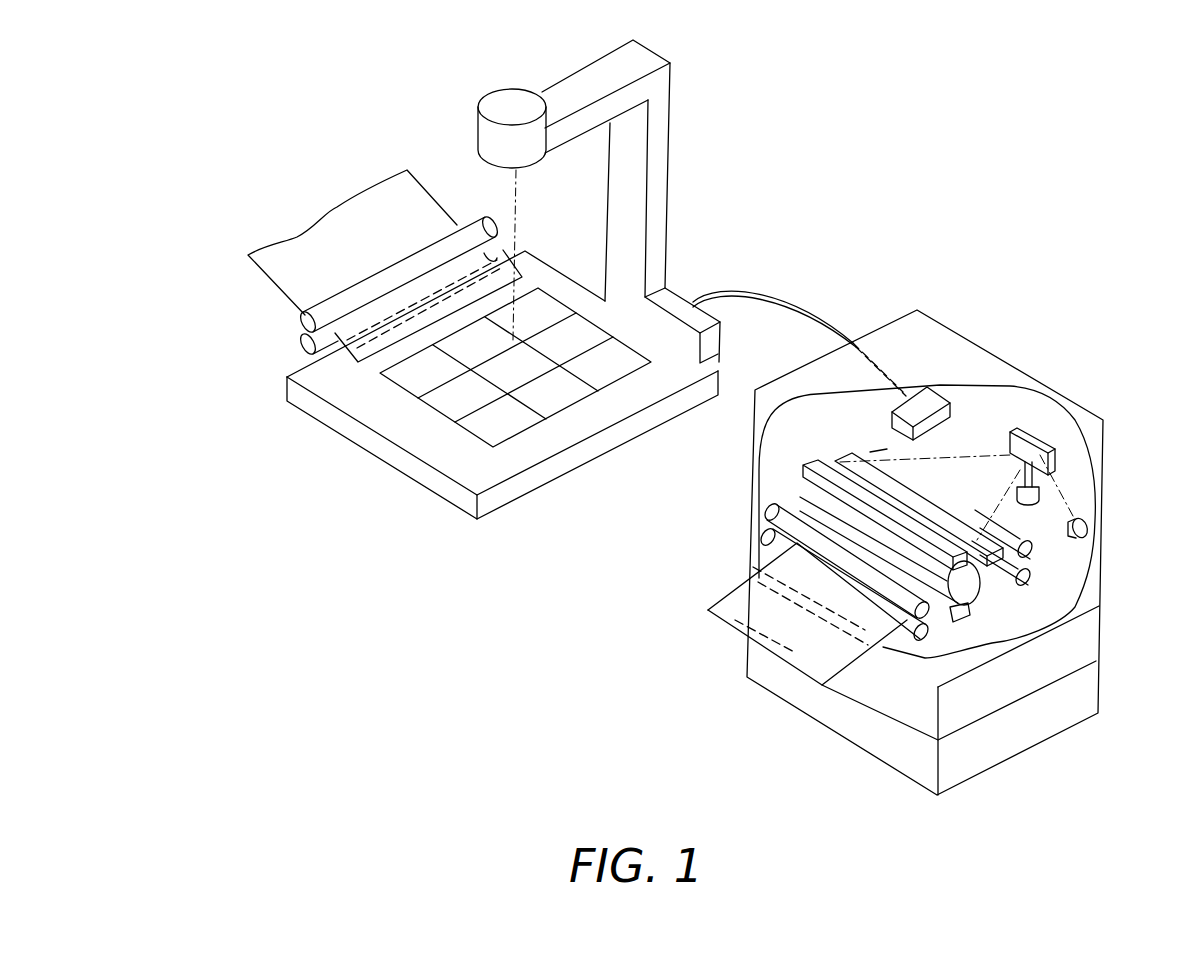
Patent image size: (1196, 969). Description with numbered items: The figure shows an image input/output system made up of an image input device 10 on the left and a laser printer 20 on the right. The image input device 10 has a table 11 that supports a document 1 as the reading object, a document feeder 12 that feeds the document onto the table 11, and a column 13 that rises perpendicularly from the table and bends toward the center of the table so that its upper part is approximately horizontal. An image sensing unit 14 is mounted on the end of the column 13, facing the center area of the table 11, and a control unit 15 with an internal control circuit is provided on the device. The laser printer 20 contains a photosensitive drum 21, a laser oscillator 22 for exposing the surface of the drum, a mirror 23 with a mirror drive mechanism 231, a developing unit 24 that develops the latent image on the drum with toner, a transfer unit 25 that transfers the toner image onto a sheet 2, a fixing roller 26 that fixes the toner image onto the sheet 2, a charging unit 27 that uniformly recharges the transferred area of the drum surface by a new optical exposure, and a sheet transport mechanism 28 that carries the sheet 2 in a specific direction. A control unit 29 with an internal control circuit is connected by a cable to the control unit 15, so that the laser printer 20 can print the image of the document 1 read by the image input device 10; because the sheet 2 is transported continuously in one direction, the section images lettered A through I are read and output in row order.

The document 1 is at (437, 410).
The sheet 2 is at (776, 656).
The image input device 10 is at (694, 186).
The table 11 is at (500, 470).
The document feeder 12 is at (306, 345).
The column 13 is at (593, 75).
The image sensing unit 14 is at (500, 102).
The control unit 15 is at (682, 297).
The laser printer 20 is at (967, 318).
The photosensitive drum 21 is at (978, 566).
The laser oscillator 22 is at (1092, 522).
The reflector plate 23 is at (1030, 434).
The mirror drive mechanism 231 is at (1043, 492).
The developing unit 24 is at (1020, 578).
The transfer unit 25 is at (953, 612).
The fixing roller 26 is at (923, 638).
The charging unit 27 is at (938, 552).
The sheet transport mechanism 28 is at (1037, 580).
The control unit 29 is at (940, 421).